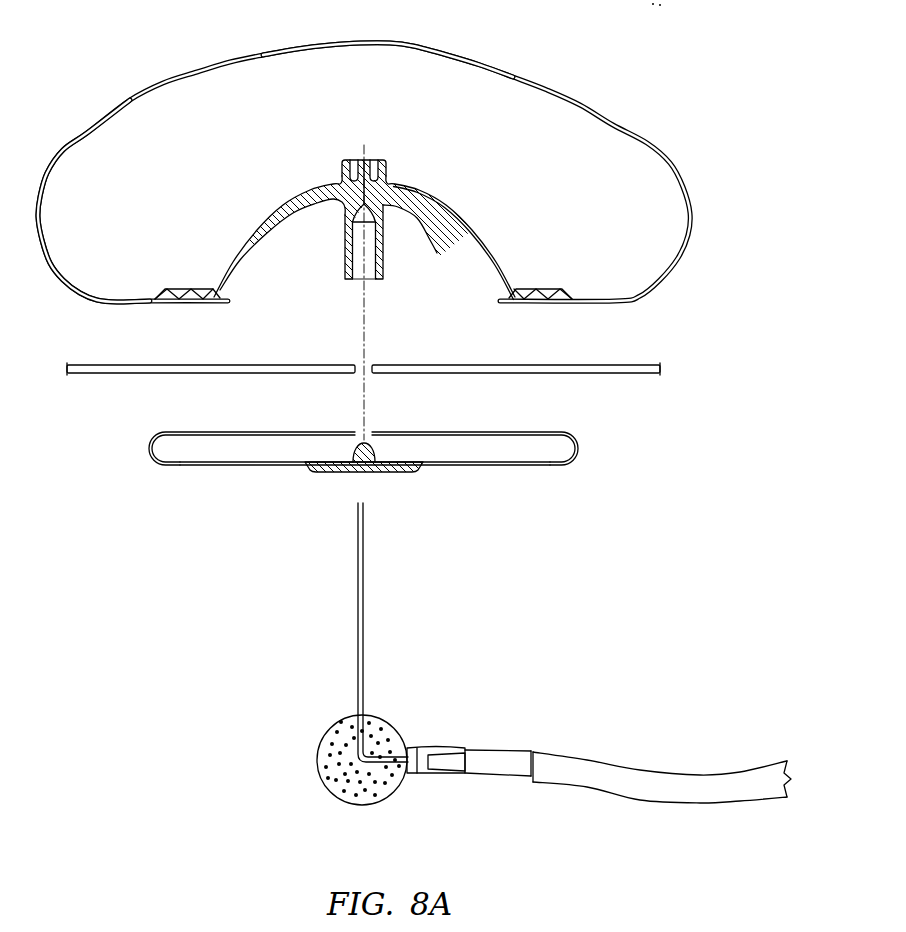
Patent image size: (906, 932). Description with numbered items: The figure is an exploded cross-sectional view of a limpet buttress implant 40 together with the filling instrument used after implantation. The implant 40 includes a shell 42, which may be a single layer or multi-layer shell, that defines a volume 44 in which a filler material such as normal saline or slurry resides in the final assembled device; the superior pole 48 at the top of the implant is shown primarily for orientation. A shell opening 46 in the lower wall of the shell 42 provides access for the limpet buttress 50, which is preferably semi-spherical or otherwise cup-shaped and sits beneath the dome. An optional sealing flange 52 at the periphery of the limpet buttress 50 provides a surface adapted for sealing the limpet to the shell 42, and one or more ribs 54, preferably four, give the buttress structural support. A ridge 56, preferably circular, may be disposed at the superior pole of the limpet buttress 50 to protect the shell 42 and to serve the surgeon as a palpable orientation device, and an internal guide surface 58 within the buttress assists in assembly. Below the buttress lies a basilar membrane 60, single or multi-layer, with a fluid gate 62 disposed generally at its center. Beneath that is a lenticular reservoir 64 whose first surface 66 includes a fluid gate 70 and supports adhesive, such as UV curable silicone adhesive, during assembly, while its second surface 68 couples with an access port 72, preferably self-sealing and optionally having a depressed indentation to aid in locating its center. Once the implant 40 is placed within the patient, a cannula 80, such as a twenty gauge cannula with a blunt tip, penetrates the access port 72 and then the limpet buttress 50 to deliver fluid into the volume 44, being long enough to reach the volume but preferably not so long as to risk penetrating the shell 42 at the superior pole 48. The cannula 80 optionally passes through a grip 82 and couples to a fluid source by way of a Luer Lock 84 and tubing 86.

The implant 40 is at (362, 173).
The shell 42 is at (62, 280).
The volume 44 is at (362, 172).
The shell opening 46 is at (461, 307).
The superior pole 48 is at (405, 45).
The limpet buttress 50 is at (287, 210).
The sealing flange 52 is at (185, 288).
The ribs 54 is at (398, 240).
The ridge 56 is at (380, 172).
The internal guide surface 58 is at (358, 283).
The basilar membrane 60 is at (363, 368).
The fluid gate 62 is at (371, 362).
The lenticular reservoir 64 is at (336, 452).
The first surface 66 is at (197, 432).
The second surface 68 is at (192, 466).
The fluid gate 70 is at (368, 430).
The access port 72 is at (400, 472).
The cannula 80 is at (368, 564).
The grip 82 is at (318, 760).
The Luer Lock 84 is at (421, 770).
The tubing 86 is at (663, 792).